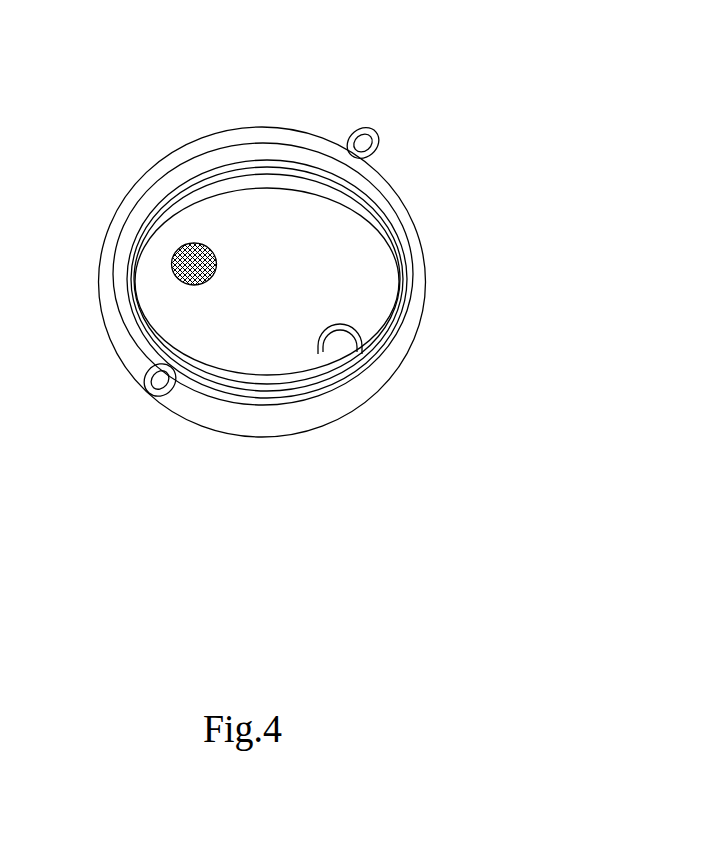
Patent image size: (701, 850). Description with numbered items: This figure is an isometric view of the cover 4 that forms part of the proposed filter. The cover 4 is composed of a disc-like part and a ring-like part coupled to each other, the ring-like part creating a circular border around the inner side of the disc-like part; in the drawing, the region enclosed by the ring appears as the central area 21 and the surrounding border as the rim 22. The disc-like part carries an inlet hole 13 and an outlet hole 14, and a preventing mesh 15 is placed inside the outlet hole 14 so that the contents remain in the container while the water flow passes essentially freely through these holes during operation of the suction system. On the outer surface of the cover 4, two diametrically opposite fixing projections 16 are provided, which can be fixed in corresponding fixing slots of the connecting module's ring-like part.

The cover 4 is at (367, 225).
The inlet hole 13 is at (327, 345).
The outlet hole 14 is at (126, 221).
The preventing mesh 15 is at (172, 267).
The fixing projections 16 is at (372, 135).
The central opening 21 is at (350, 242).
The rim 22 is at (411, 281).